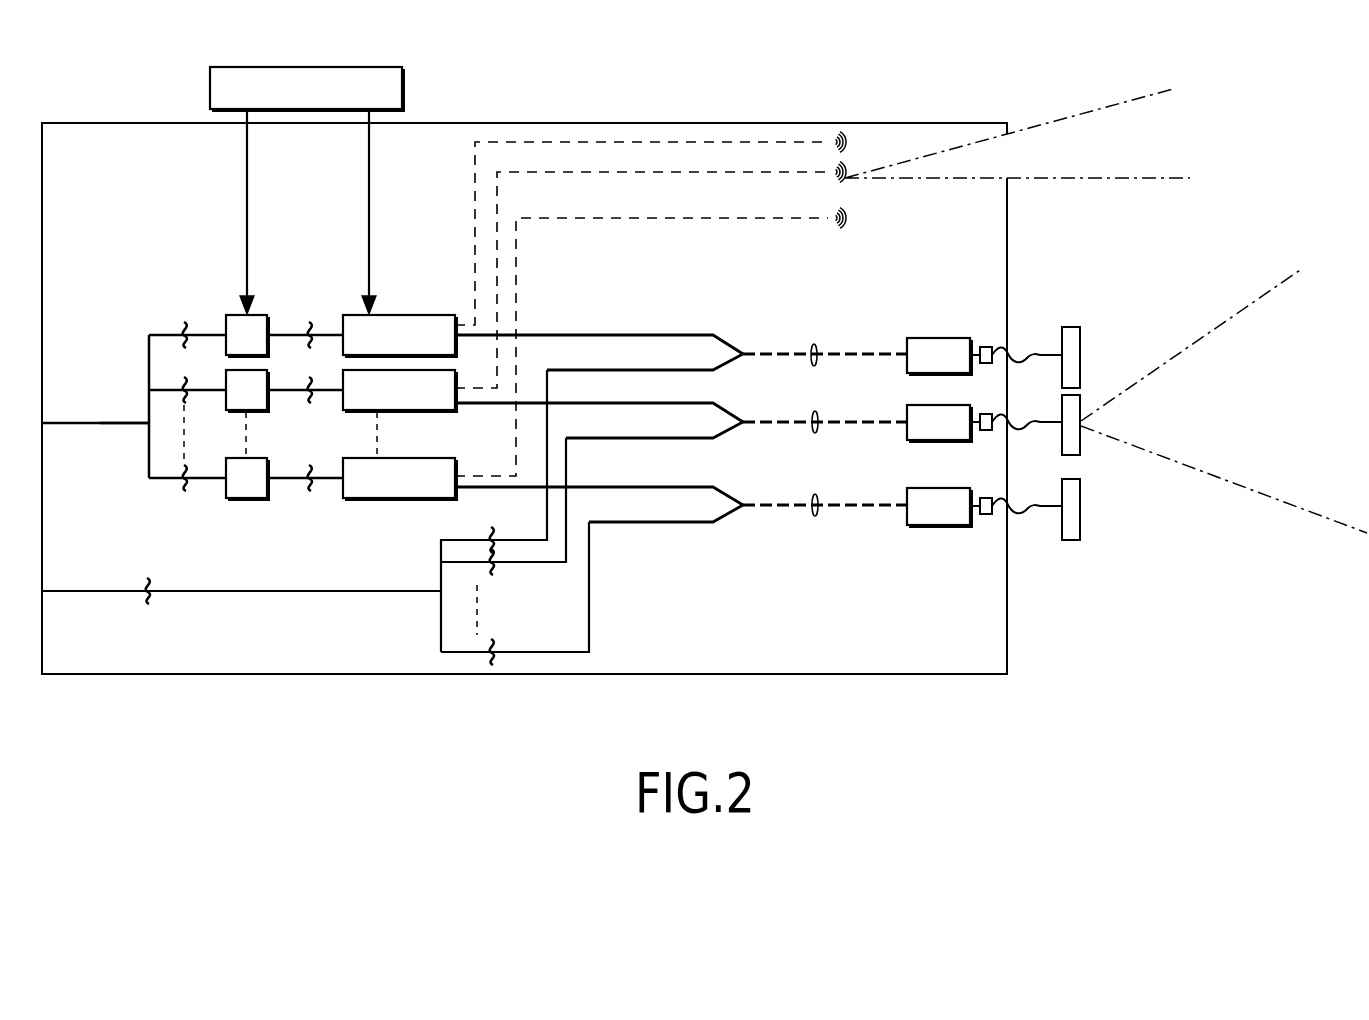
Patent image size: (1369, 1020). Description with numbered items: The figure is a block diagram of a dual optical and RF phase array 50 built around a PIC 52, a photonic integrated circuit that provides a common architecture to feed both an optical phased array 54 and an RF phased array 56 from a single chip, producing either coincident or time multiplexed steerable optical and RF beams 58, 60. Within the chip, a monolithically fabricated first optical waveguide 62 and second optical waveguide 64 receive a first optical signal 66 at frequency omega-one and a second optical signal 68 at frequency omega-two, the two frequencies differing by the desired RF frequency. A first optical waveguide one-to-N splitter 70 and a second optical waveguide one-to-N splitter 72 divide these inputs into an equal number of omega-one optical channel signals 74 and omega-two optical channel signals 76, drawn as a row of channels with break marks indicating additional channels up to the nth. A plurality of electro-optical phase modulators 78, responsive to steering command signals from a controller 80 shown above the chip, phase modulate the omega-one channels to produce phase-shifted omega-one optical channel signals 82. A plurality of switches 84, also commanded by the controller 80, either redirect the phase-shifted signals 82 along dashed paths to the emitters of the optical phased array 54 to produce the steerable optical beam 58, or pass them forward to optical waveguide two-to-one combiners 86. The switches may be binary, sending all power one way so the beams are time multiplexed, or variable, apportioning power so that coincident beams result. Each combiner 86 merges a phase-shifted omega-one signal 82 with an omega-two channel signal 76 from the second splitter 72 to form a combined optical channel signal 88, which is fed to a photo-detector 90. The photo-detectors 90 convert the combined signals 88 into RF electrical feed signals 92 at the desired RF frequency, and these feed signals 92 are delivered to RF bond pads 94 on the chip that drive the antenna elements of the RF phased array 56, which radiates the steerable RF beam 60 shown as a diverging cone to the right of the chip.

The dual optical and RF phase array 50 is at (1068, 254).
The PIC 52 is at (131, 194).
The optical phased array 54 is at (846, 223).
The RF phased array 56 is at (1081, 345).
The steerable optical beam 58 is at (1162, 154).
The steerable RF beam 60 is at (1276, 366).
The first optical waveguide 62 is at (112, 424).
The second optical waveguide 64 is at (109, 592).
The first optical signal 66 is at (64, 440).
The second optical signal 68 is at (150, 578).
The first optical waveguide 1:N splitter 70 is at (149, 362).
The second optical waveguide 1:N splitter 72 is at (441, 549).
The ω1 optical channel signals 74 is at (184, 322).
The ω2 optical channel signals 76 is at (496, 526).
The electro-optical phase modulators 78 is at (253, 315).
The controller 80 is at (403, 97).
The phase-shifted ω1 optical channel signals 82 is at (311, 322).
The switches 84 is at (390, 315).
The optical waveguide 2:1 combiners 86 is at (722, 335).
The combined optical channel signals 88 is at (810, 358).
The photo-detectors 90 is at (939, 338).
The RF electrical feed signals 92 is at (1024, 352).
The RF bond pads 94 is at (986, 347).